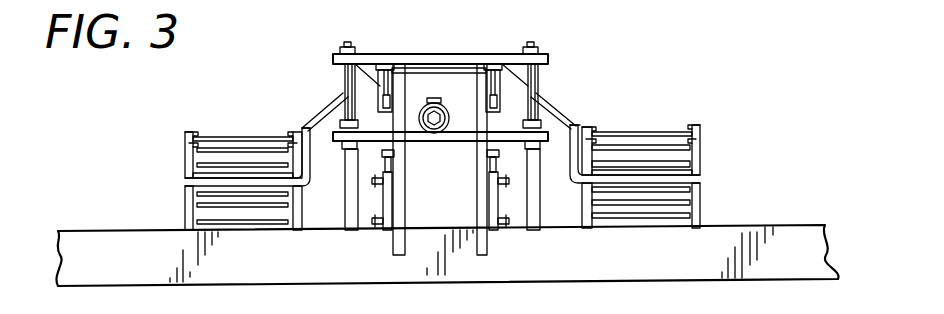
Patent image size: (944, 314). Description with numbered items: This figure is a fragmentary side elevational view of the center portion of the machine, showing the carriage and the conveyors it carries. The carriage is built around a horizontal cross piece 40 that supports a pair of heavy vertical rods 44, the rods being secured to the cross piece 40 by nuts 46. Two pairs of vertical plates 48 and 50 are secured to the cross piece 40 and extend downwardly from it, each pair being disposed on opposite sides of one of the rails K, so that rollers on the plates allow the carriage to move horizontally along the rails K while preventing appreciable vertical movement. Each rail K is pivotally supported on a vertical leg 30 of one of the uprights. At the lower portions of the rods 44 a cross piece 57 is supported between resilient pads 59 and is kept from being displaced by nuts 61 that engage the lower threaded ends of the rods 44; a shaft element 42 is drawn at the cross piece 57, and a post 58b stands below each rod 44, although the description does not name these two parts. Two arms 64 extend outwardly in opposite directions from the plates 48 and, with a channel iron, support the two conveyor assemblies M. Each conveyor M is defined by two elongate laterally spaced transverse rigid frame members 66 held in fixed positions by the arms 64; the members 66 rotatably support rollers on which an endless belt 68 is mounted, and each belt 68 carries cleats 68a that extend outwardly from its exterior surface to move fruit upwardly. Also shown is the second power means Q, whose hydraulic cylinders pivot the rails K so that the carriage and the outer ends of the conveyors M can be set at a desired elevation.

The vertical leg 30 is at (482, 203).
The horizontal cross piece 40 is at (500, 54).
The shaft 42 is at (482, 150).
The vertical rod 44 is at (347, 72).
The nut 46 is at (372, 33).
The vertical plate 48 is at (378, 88).
The vertical plate 50 is at (386, 66).
The cross piece 57 is at (412, 141).
The support post 58b is at (392, 234).
The resilient pad 59 is at (343, 137).
The nut 61 is at (538, 147).
The arm 64 is at (333, 102).
The rigid frame member 66 is at (345, 142).
The endless belt 68 is at (206, 201).
The cleat 68a is at (244, 224).
The rail K is at (478, 76).
The conveyor assembly M is at (186, 160).
The second power means Q is at (393, 236).